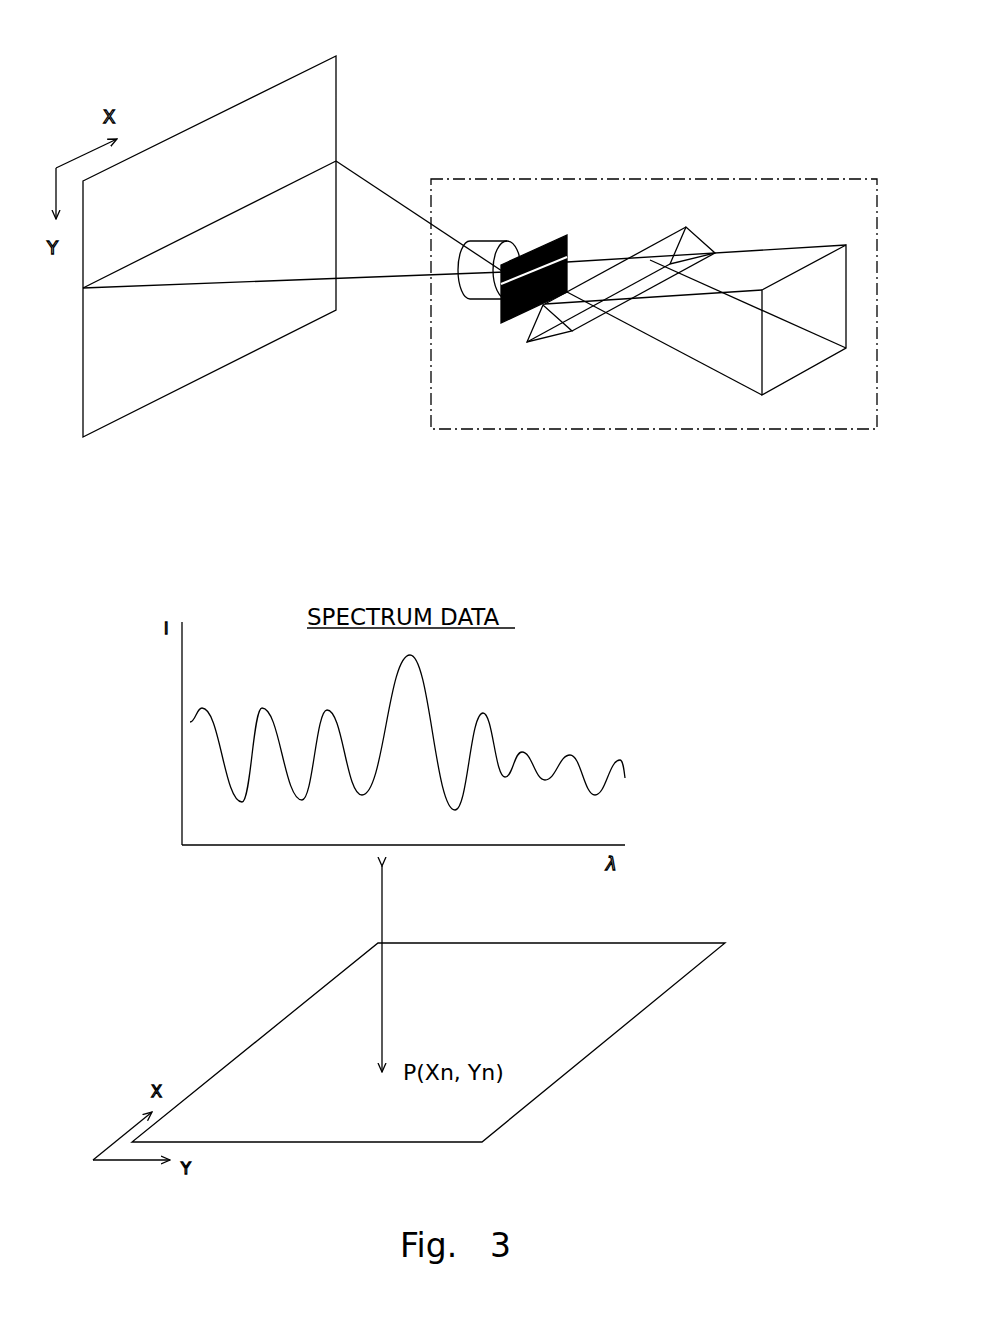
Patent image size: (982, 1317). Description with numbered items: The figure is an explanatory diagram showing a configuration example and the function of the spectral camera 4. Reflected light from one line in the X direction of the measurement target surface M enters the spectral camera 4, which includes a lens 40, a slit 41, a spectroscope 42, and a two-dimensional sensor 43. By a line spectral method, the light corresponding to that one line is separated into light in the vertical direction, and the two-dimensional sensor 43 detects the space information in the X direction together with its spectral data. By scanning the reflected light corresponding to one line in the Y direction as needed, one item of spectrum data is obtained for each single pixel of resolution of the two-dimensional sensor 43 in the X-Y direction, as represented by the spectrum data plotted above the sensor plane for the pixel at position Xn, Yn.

The measurement target surface M is at (337, 53).
The spectral camera 4 is at (633, 430).
The lens 40 is at (488, 240).
The slit 41 is at (572, 238).
The spectroscope 42 is at (686, 227).
The two-dimensional sensor 43 is at (797, 269).